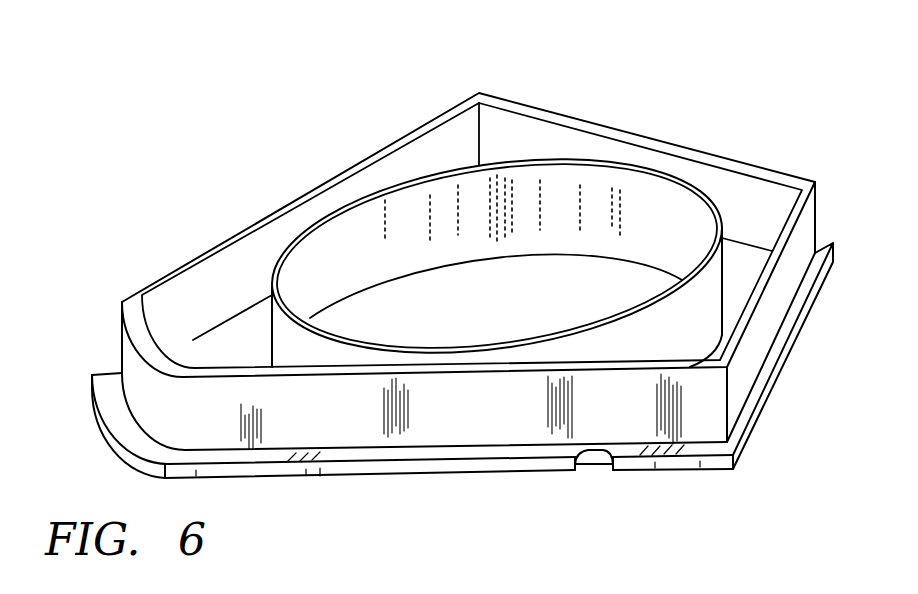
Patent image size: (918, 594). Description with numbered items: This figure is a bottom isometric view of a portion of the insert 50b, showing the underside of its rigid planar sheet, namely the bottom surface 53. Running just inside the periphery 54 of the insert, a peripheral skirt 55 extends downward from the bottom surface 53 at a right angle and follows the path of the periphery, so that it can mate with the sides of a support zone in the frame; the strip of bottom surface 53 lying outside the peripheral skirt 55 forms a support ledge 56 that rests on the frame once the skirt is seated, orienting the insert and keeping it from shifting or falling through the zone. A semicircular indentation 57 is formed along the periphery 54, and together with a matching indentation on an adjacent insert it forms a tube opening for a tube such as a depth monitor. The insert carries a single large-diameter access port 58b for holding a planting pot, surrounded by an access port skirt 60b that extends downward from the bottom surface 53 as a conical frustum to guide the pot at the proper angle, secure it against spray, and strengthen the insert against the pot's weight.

The insert 50b is at (117, 212).
The bottom surface 53 is at (216, 344).
The periphery 54 is at (773, 432).
The peripheral skirt 55 is at (447, 415).
The support ledge 56 is at (158, 396).
The semicircular indentation 57 is at (595, 458).
The access port 58b is at (578, 212).
The access port skirt 60b is at (678, 212).